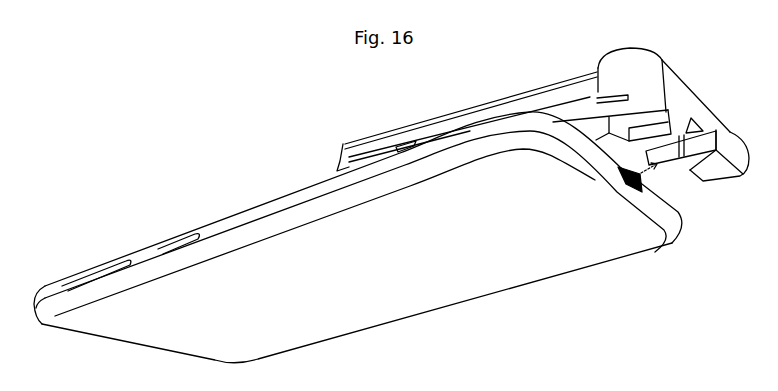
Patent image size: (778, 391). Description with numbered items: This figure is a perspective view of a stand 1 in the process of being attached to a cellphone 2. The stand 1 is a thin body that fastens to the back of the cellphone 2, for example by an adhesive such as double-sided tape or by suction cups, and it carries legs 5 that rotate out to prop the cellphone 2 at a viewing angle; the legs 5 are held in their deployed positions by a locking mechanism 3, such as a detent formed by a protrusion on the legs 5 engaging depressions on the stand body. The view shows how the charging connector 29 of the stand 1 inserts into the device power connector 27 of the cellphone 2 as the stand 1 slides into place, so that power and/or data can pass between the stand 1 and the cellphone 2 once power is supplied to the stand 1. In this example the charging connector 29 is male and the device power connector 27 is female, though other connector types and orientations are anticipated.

The stand 1 is at (604, 54).
The cellphone 2 is at (362, 238).
The locking mechanism 3 is at (569, 79).
The legs 5 is at (398, 140).
The device power connector 27 is at (627, 190).
The charging connector 29 is at (672, 166).